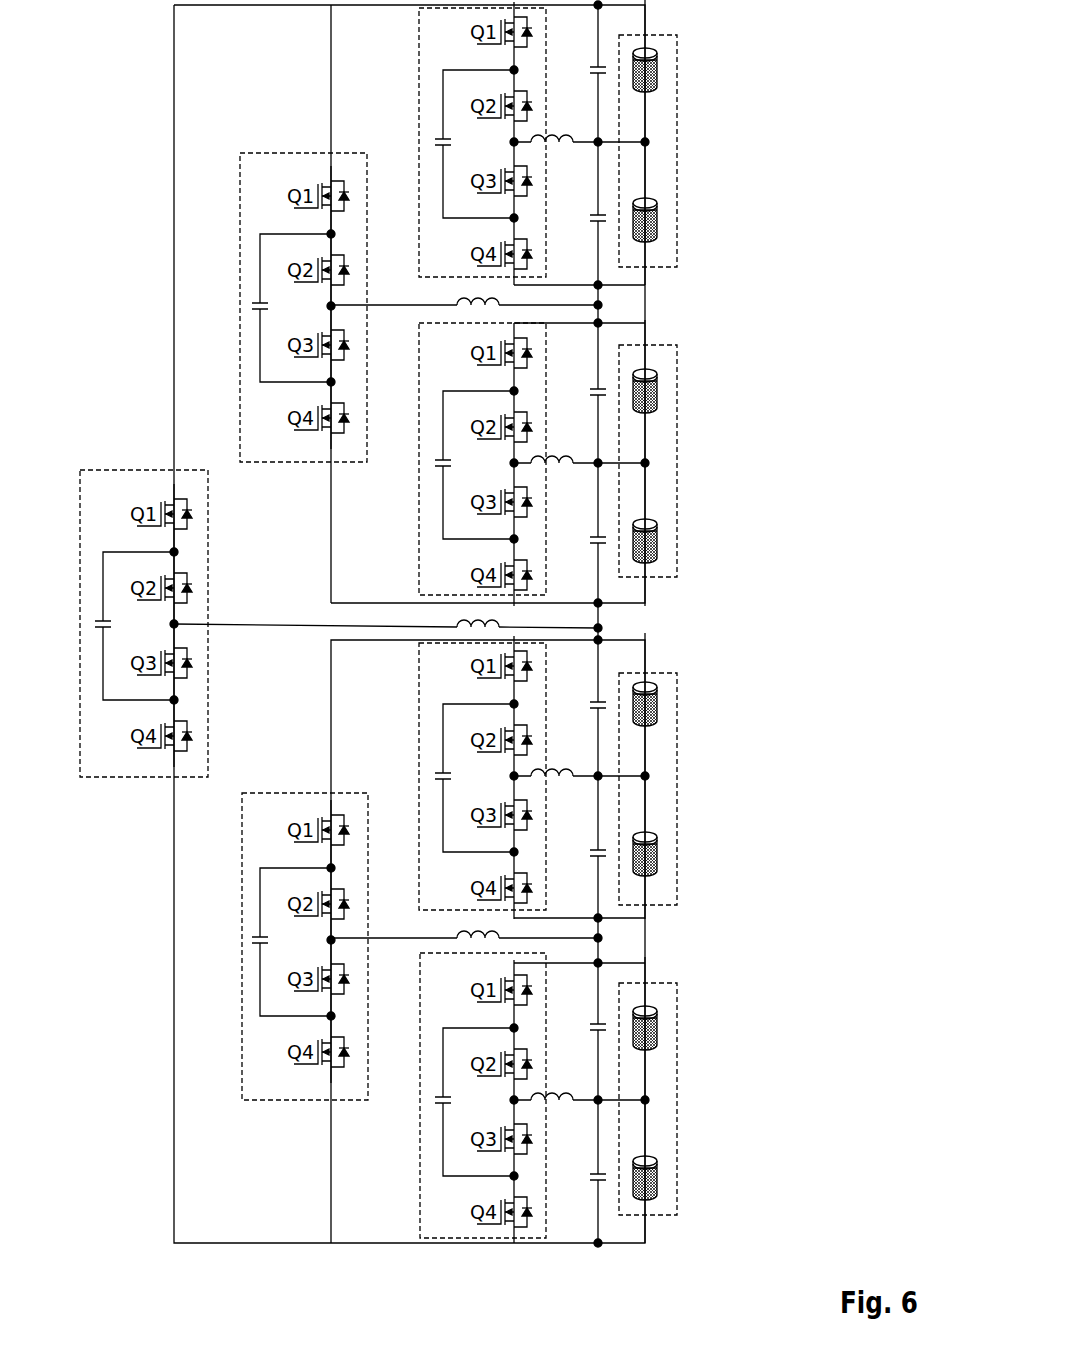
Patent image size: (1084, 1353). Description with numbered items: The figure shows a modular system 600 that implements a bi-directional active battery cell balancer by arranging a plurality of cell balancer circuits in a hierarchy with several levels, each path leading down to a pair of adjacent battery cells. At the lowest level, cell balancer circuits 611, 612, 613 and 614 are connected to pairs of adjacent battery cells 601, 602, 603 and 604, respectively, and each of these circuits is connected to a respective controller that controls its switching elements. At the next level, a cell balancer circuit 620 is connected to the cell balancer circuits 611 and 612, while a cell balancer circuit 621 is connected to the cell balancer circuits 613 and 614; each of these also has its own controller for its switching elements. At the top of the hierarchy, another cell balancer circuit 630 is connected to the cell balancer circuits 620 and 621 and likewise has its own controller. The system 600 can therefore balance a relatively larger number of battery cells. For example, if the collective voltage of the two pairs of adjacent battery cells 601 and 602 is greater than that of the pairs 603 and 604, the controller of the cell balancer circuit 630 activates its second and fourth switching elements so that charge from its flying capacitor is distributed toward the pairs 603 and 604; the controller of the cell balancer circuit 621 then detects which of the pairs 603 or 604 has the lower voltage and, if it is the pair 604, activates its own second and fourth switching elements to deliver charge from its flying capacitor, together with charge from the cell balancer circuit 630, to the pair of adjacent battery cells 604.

The modular system 600 is at (840, 1197).
The pair of adjacent battery cells 601 is at (677, 112).
The pair of adjacent battery cells 602 is at (677, 438).
The pair of adjacent battery cells 603 is at (677, 752).
The pair of adjacent battery cells 604 is at (677, 1076).
The cell balancer circuit 611 is at (419, 72).
The cell balancer circuit 612 is at (419, 560).
The cell balancer circuit 613 is at (419, 711).
The cell balancer circuit 614 is at (420, 1197).
The cell balancer circuit 620 is at (265, 152).
The cell balancer circuit 621 is at (268, 793).
The cell balancer circuit 630 is at (99, 470).